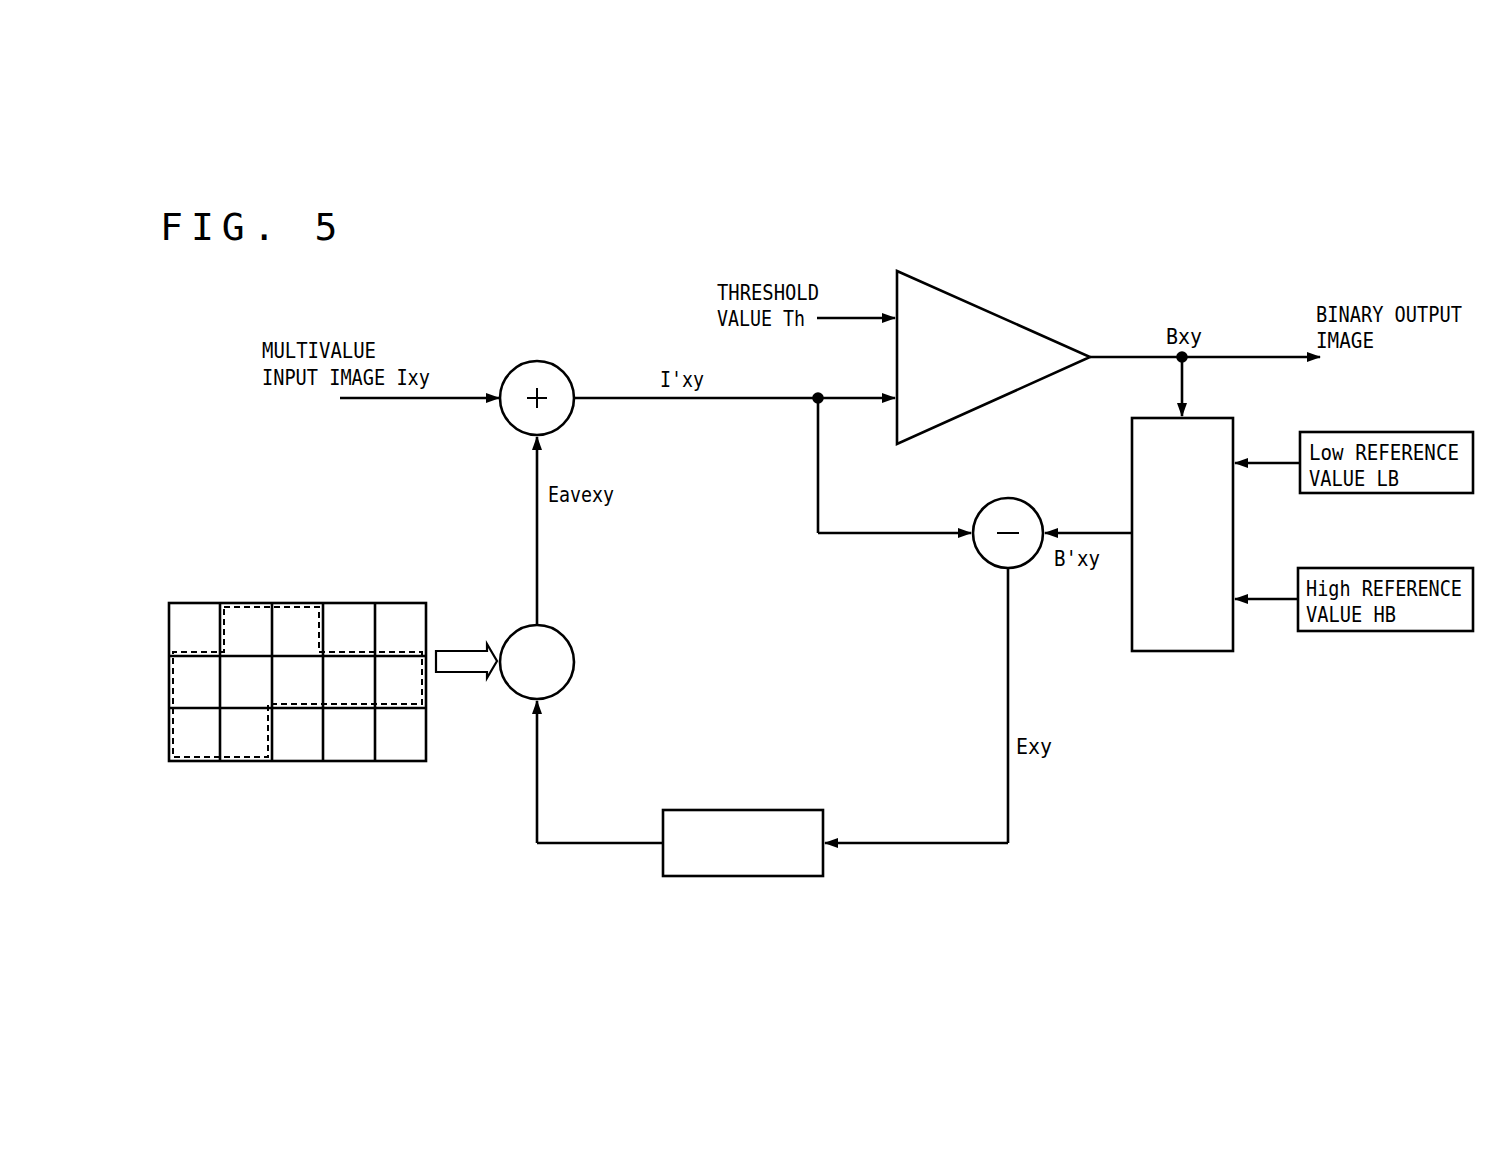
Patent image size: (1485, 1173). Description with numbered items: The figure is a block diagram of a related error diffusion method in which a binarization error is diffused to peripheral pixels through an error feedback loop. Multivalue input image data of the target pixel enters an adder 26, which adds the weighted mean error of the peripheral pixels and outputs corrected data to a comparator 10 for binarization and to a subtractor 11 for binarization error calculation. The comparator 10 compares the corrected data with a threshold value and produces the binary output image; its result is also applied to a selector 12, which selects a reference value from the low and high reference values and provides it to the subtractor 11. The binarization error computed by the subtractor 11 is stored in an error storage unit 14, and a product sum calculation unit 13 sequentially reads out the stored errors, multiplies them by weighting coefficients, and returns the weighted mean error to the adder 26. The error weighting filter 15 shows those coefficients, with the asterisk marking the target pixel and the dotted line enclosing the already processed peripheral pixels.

The comparator 10 is at (978, 311).
The subtractor 11 is at (1033, 509).
The selector 12 is at (1218, 418).
The product sum calculation unit 13 is at (563, 638).
The error storage unit 14 is at (773, 810).
The error weighting filter 15 is at (405, 603).
The adder 26 is at (556, 366).